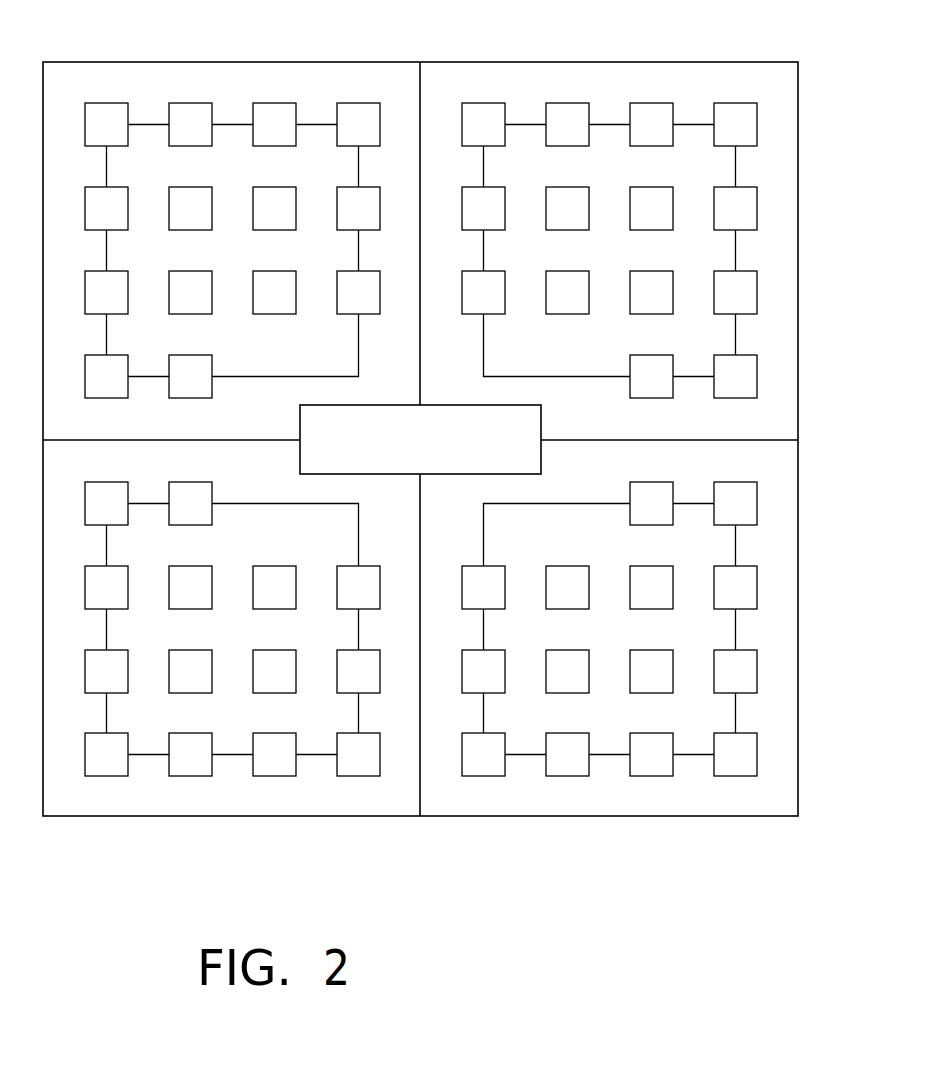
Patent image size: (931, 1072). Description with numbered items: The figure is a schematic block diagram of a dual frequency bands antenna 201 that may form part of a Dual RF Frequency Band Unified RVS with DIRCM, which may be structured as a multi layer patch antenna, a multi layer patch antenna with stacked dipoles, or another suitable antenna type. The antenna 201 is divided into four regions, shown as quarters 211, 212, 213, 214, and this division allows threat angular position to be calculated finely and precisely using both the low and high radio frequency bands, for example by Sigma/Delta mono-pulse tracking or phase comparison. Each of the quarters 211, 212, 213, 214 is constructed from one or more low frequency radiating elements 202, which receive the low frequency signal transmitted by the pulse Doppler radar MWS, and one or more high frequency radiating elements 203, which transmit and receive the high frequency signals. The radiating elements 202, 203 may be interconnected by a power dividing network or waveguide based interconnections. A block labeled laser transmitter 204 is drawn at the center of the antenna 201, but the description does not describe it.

The dual frequency bands antenna 201 is at (704, 945).
The low frequency radiating element 202 is at (305, 163).
The high frequency radiating element 203 is at (192, 125).
The laser transmitter 204 is at (515, 453).
The quarter 211 is at (233, 211).
The quarter 212 is at (765, 85).
The quarter 213 is at (753, 798).
The quarter 214 is at (65, 798).